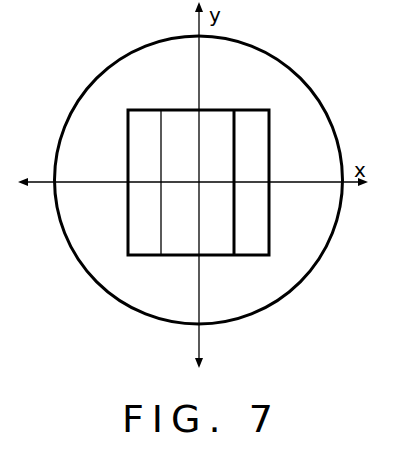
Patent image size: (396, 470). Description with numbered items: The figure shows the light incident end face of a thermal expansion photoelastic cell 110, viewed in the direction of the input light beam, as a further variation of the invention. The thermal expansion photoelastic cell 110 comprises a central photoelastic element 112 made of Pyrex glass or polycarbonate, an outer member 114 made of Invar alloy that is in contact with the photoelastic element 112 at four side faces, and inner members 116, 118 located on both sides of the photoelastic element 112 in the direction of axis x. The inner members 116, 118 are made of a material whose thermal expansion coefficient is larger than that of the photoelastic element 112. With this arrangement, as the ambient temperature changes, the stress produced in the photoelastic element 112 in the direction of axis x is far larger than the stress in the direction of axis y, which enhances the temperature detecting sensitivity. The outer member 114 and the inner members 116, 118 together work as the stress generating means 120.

The thermal expansion photoelastic cell 110 is at (298, 60).
The photoelastic element 112 is at (170, 222).
The outer member 114 is at (138, 73).
The inner member 116 is at (138, 157).
The inner member 118 is at (255, 143).
The stress generating means 120 is at (258, 268).